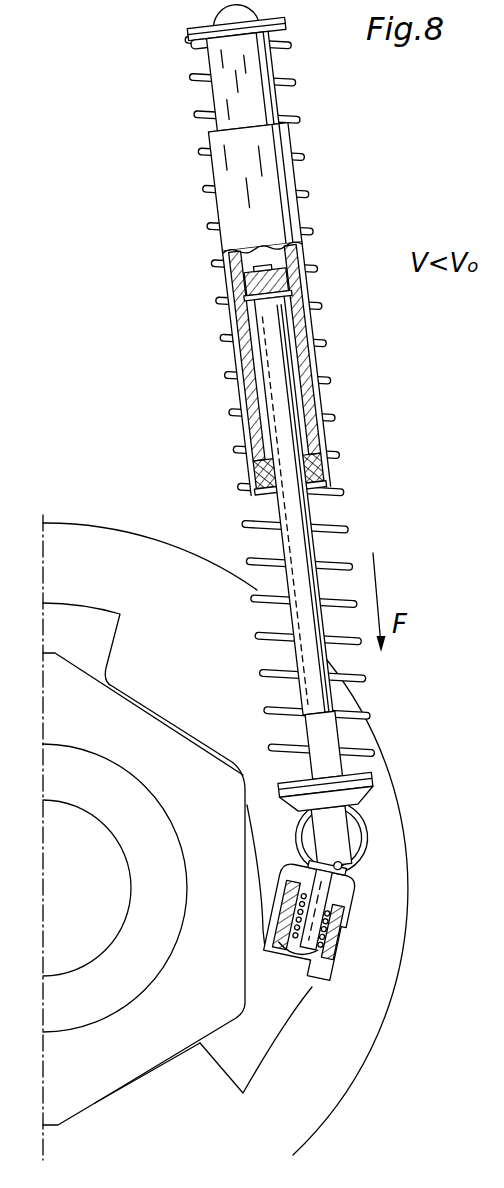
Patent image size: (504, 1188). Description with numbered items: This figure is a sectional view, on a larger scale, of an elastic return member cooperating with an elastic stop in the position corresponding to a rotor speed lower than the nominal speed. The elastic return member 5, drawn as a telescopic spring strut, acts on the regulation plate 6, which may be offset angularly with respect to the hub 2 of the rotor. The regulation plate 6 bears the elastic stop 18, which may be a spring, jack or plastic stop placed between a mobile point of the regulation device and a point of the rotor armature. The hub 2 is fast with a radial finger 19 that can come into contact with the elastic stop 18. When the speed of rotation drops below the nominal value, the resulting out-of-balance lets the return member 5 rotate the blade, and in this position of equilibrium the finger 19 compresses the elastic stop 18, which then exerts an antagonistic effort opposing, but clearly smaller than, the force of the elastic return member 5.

The hub 2 is at (140, 990).
The elastic return member 5 is at (347, 427).
The regulation plate 6 is at (383, 888).
The elastic stop 18 is at (347, 930).
The radial finger 19 is at (280, 1033).